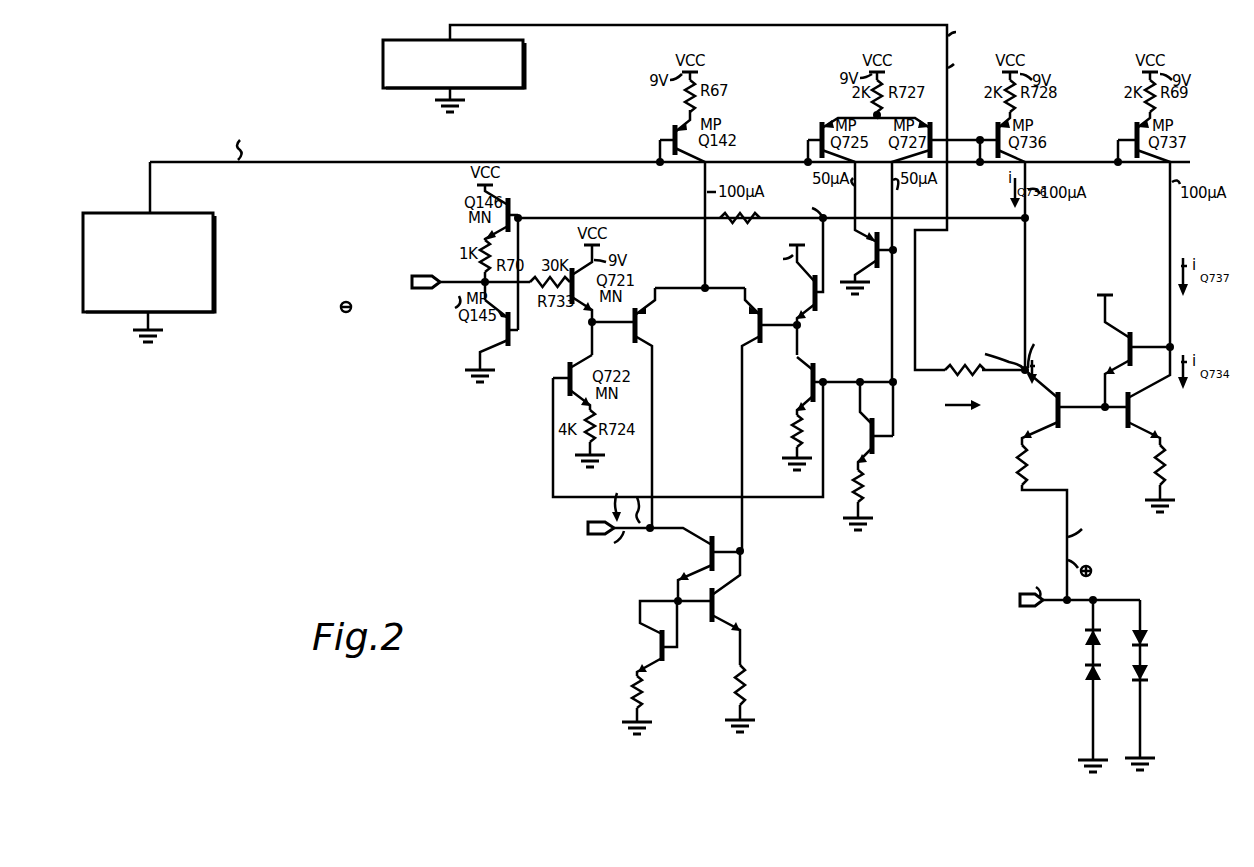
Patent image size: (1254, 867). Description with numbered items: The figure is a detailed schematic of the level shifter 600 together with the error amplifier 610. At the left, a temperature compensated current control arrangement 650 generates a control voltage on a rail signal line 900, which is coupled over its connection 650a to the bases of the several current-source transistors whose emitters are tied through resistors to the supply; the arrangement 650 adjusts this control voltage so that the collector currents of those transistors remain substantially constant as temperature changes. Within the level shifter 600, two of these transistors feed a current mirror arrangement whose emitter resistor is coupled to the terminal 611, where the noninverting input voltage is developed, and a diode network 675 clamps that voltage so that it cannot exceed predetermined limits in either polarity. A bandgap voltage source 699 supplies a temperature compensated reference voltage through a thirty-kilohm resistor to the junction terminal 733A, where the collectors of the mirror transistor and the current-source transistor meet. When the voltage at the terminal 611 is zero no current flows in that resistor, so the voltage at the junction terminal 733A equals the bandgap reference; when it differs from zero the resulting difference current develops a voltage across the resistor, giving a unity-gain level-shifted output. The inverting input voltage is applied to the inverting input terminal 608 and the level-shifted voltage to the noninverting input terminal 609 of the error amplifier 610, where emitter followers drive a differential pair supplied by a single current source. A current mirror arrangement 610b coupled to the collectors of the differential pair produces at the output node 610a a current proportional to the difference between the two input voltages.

The level shifter 600 is at (1106, 418).
The inverting input terminal 608 is at (450, 282).
The noninverting input terminal 609 is at (826, 216).
The error amplifier 610 is at (734, 356).
The amplifier output node 610a is at (653, 526).
The current mirror arrangement 610b is at (696, 635).
The terminal 611 is at (1054, 612).
The temperature compensated current control arrangement 650 is at (215, 285).
The controller output line VBR 650a is at (151, 206).
The diode network 675 is at (1150, 684).
The bandgap voltage source 699 is at (526, 62).
The junction terminal 733A is at (987, 377).
The rail signal line 900 is at (370, 166).